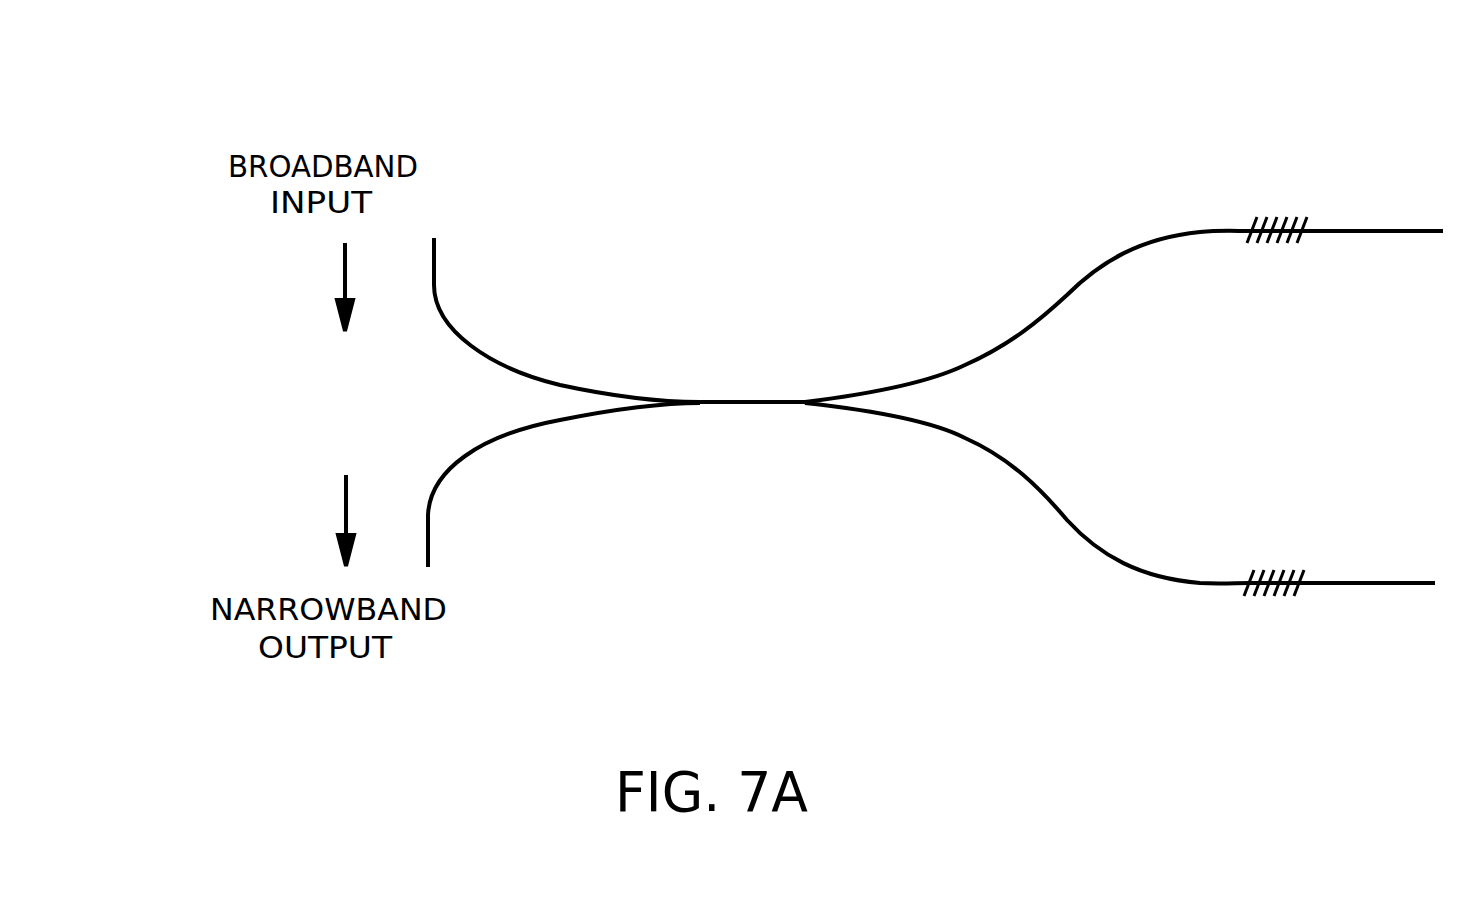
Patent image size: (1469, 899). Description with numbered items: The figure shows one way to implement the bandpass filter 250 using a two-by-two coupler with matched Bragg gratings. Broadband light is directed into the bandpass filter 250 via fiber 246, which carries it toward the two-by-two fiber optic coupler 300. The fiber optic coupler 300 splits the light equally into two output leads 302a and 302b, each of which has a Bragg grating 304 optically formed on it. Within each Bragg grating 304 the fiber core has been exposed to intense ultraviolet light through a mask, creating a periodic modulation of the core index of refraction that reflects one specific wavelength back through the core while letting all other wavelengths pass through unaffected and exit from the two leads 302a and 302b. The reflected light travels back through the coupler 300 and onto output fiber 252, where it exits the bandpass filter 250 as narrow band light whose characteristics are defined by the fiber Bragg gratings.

The bandpass filter 250 is at (803, 158).
The fiber 246 is at (434, 272).
The output fiber 252 is at (430, 518).
The fiber optic coupler 300 is at (765, 400).
The output lead 302a is at (1068, 295).
The output lead 302b is at (1093, 550).
The Bragg grating 304 is at (1277, 206).